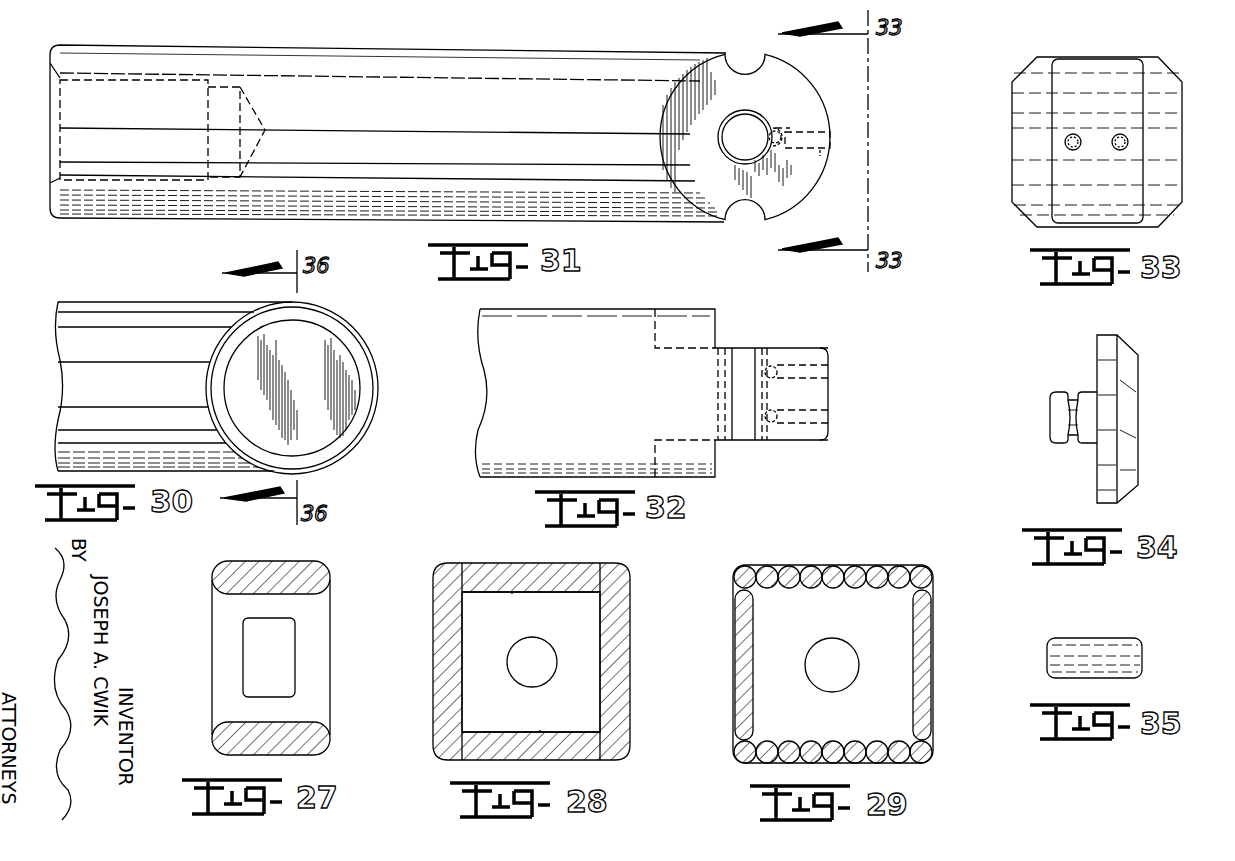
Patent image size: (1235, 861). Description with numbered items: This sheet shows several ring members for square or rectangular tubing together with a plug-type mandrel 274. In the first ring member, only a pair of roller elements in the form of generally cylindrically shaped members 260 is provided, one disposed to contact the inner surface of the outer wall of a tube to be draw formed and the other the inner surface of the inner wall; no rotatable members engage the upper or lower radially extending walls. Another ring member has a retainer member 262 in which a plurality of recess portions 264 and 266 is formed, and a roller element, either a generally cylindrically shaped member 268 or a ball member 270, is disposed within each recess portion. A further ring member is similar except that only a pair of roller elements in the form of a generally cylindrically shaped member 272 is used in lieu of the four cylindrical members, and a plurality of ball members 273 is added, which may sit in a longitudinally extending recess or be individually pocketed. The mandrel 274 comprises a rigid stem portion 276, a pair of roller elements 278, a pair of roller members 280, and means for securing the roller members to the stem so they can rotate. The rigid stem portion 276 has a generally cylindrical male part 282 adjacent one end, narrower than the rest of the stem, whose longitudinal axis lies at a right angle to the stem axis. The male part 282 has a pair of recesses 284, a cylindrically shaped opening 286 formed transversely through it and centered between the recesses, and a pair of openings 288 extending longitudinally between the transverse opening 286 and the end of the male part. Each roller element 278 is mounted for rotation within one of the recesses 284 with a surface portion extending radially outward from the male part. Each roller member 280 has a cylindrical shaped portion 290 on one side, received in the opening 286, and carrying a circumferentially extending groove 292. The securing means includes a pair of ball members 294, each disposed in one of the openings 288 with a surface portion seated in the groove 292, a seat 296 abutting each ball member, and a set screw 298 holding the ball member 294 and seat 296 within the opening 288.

In FIG. 27, the generally cylindrically shaped members 260 is at (296, 563).
In FIG. 28, the retainer member 262 is at (531, 661).
In FIG. 28, the recess portions 264 is at (450, 566).
In FIG. 28, the recess portions 266 is at (512, 588).
In FIG. 28, the generally cylindrically shaped member 268 is at (436, 630).
In FIG. 28, the ball member 270 is at (622, 574).
In FIG. 29, the generally cylindrically shaped member 272 is at (738, 654).
In FIG. 29, the ball members 273 is at (895, 566).
In FIG. 30, the mandrel 274 is at (258, 299).
In FIG. 31, the rigid stem portion 276 is at (500, 48).
In FIG. 30, the rigid stem portion 276 is at (122, 306).
In FIG. 32, the rigid stem portion 276 is at (612, 314).
In FIG. 33, the roller elements 278 is at (1102, 58).
In FIG. 35, the roller elements 278 is at (1098, 638).
In FIG. 30, the roller members 280 is at (292, 388).
In FIG. 32, the roller members 280 is at (795, 394).
In FIG. 33, the roller members 280 is at (1182, 100).
In FIG. 34, the roller members 280 is at (1138, 414).
In FIG. 31, the male part 282 is at (726, 228).
In FIG. 31, the recesses 284 is at (740, 68).
In FIG. 32, the recesses 284 is at (742, 358).
In FIG. 31, the cylindrically shaped opening 286 is at (733, 152).
In FIG. 32, the cylindrically shaped opening 286 is at (724, 398).
In FIG. 31, the openings 288 is at (830, 137).
In FIG. 32, the openings 288 is at (820, 366).
In FIG. 33, the openings 288 is at (1066, 138).
In FIG. 34, the cylindrical shaped portion 290 is at (1084, 448).
In FIG. 34, the circumferentially extending groove 292 is at (1073, 398).
In FIG. 31, the ball members 294 is at (766, 130).
In FIG. 32, the ball members 294 is at (758, 364).
In FIG. 31, the seat 296 is at (781, 131).
In FIG. 32, the seat 296 is at (780, 368).
In FIG. 31, the set screw 298 is at (821, 153).
In FIG. 32, the set screw 298 is at (820, 380).
In FIG. 33, the set screw 298 is at (1066, 145).